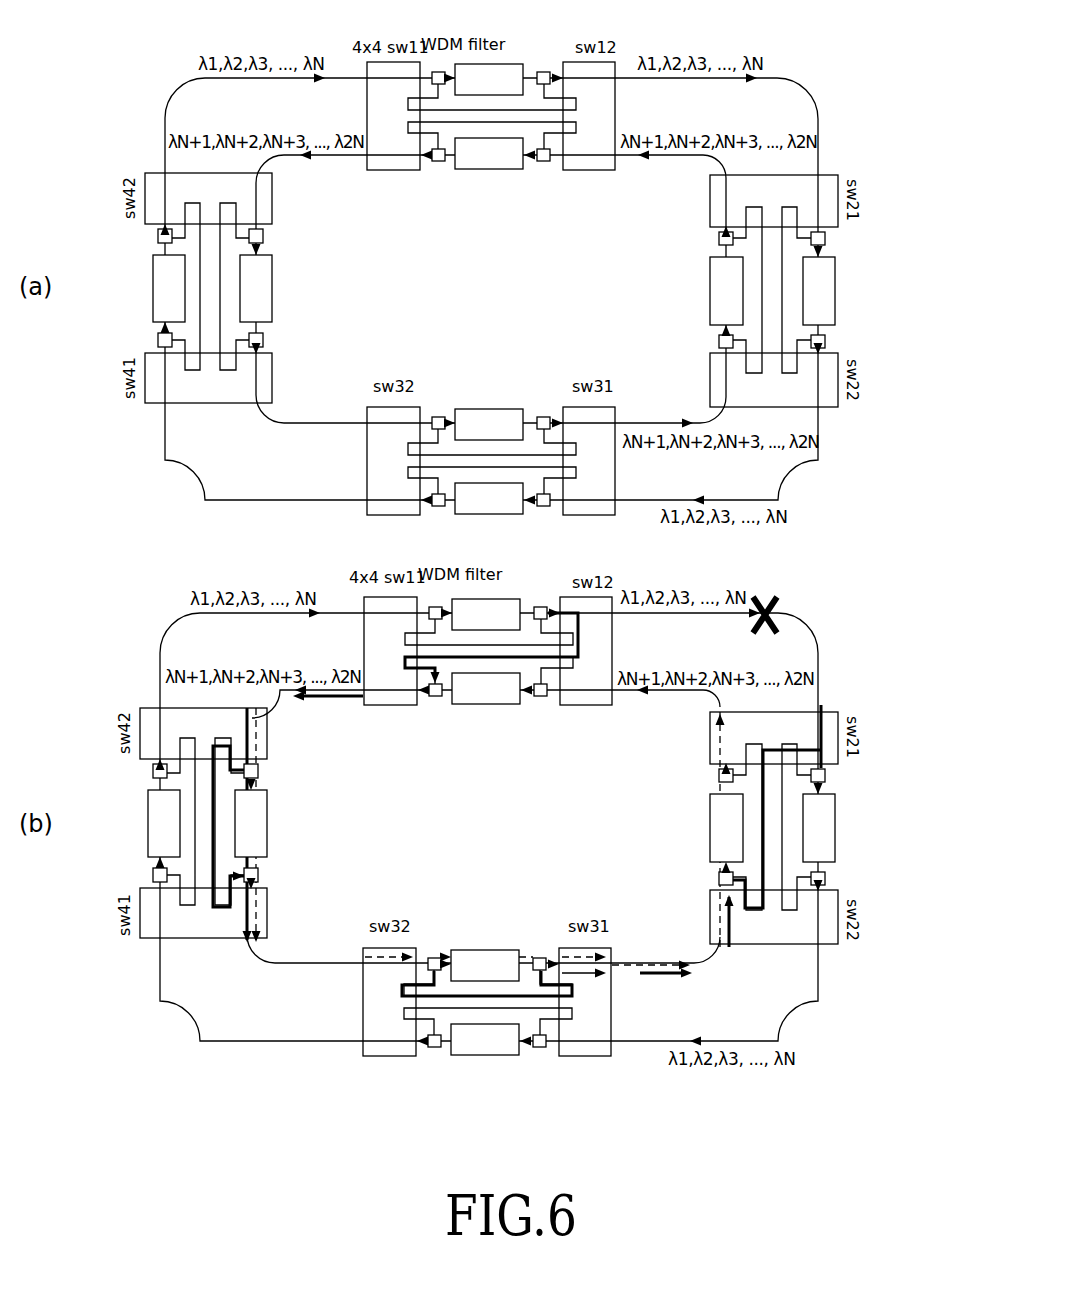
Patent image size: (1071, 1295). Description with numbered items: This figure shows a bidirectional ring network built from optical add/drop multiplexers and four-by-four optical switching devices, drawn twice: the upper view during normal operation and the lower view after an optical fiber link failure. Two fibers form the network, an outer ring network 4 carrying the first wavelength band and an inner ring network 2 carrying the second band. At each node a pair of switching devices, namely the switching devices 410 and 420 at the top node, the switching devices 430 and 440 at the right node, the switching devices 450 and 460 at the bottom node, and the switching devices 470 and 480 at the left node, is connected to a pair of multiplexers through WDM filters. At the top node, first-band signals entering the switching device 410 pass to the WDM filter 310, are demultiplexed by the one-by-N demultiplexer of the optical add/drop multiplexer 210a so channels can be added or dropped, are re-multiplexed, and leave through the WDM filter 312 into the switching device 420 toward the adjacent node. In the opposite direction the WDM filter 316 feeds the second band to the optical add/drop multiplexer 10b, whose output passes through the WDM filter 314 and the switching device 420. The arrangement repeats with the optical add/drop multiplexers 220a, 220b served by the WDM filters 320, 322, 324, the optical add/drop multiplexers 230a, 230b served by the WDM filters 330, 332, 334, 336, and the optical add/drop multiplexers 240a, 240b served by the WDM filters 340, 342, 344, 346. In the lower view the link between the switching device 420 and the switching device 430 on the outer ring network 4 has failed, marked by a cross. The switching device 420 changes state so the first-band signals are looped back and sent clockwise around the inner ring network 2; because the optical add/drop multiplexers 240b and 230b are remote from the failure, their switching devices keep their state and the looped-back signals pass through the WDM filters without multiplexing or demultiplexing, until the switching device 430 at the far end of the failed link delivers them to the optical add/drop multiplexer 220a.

The inner ring network 2 is at (327, 423).
The outer ring network 4 is at (268, 500).
The optical add/drop multiplexer 10b is at (478, 170).
The optical add/drop multiplexer 210a is at (481, 64).
The optical add/drop multiplexer 220a is at (835, 292).
The optical add/drop multiplexer 220b is at (710, 288).
The optical add/drop multiplexer 230a is at (481, 409).
The optical add/drop multiplexer 230b is at (478, 517).
The optical add/drop multiplexer 240a is at (153, 289).
The optical add/drop multiplexer 240b is at (272, 290).
The WDM filter 310 is at (438, 71).
The WDM filter 312 is at (544, 71).
The WDM filter 314 is at (438, 162).
The WDM filter 316 is at (544, 162).
The WDM filter 320 is at (825, 238).
The WDM filter 322 is at (825, 340).
The WDM filter 324 is at (719, 238).
The WDM filter 330 is at (544, 507).
The WDM filter 332 is at (438, 507).
The WDM filter 334 is at (544, 416).
The WDM filter 336 is at (438, 416).
The WDM filter 340 is at (158, 340).
The WDM filter 342 is at (158, 236).
The WDM filter 344 is at (263, 340).
The WDM filter 346 is at (263, 237).
The 4×4 optical switching device 410 is at (378, 171).
The 4×4 optical switching device 420 is at (585, 171).
The 4×4 optical switching device 430 is at (710, 203).
The 4×4 optical switching device 440 is at (719, 340).
The 4×4 optical switching device 450 is at (585, 516).
The 4×4 optical switching device 460 is at (378, 516).
The 4×4 optical switching device 470 is at (272, 371).
The 4×4 optical switching device 480 is at (272, 204).